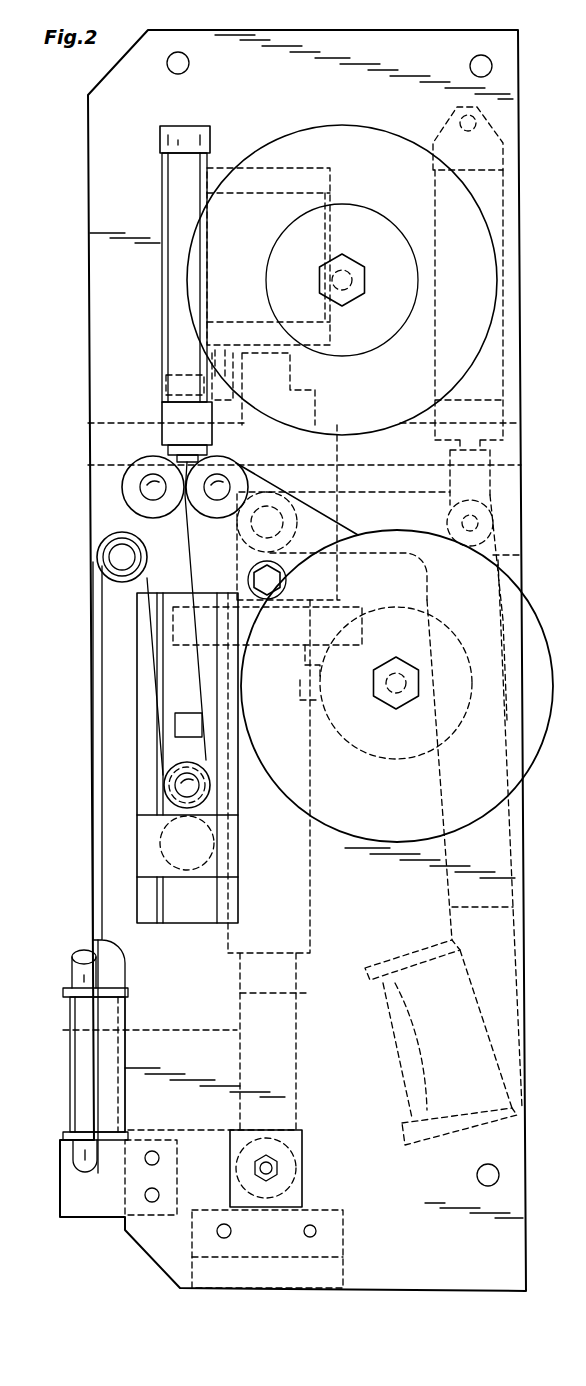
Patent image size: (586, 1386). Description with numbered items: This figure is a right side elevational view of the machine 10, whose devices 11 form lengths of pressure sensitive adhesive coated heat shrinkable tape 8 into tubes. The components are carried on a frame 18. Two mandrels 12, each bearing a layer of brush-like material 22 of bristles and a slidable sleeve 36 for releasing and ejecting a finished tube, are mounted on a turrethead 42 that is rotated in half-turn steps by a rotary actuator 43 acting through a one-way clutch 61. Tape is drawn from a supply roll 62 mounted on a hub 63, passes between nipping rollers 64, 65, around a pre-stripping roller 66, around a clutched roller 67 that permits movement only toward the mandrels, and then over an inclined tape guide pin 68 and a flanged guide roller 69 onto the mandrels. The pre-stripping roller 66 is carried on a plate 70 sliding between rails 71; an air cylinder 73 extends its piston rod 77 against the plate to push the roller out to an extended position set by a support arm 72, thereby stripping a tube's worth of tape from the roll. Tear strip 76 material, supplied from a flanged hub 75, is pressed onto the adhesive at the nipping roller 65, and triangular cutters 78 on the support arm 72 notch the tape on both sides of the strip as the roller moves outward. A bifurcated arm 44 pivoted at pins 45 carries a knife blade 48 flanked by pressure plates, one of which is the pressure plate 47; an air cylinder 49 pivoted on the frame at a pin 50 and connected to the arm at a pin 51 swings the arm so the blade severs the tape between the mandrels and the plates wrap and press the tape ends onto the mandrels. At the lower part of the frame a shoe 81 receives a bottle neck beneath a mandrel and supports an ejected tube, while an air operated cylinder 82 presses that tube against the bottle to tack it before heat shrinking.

The tape 8 is at (200, 673).
The machine 10 is at (532, 475).
The device 11 is at (298, 1095).
The mandrel 12 is at (295, 1065).
The frame 18 is at (515, 370).
The layer of brush-like material 22 is at (302, 993).
The sleeve 36 is at (312, 875).
The turrethead 42 is at (360, 617).
The rotary actuator 43 is at (277, 170).
The bifurcated arm 44 is at (522, 560).
The pin 45 is at (283, 528).
The pressure plate 47 is at (470, 889).
The knife blade 48 is at (405, 948).
The air cylinder 49 is at (498, 198).
The pin 50 is at (458, 121).
The pin 51 is at (458, 522).
The one-way clutch 61 is at (277, 375).
The supply roll 62 is at (371, 170).
The hub 63 is at (388, 315).
The nipping roller 64 is at (150, 465).
The nipping roller 65 is at (222, 462).
The pre-stripping roller 66 is at (205, 790).
The clutched roller 67 is at (122, 582).
The tape guide pin 68 is at (83, 955).
The guide roller 69 is at (113, 988).
The plate 70 is at (182, 748).
The rail 71 is at (140, 703).
The support arm 72 is at (137, 838).
The air cylinder 73 is at (175, 323).
The flanged hub 75 is at (402, 752).
The tear strip 76 is at (275, 487).
The piston rod 77 is at (170, 462).
The cutter 78 is at (215, 850).
The shoe 81 is at (335, 1250).
The air operated cylinder 82 is at (303, 1147).